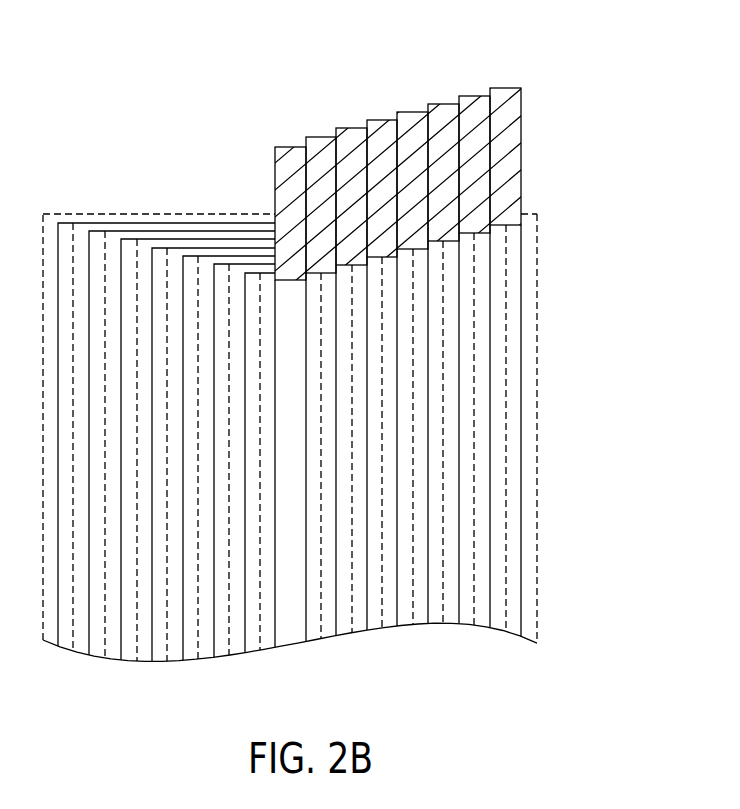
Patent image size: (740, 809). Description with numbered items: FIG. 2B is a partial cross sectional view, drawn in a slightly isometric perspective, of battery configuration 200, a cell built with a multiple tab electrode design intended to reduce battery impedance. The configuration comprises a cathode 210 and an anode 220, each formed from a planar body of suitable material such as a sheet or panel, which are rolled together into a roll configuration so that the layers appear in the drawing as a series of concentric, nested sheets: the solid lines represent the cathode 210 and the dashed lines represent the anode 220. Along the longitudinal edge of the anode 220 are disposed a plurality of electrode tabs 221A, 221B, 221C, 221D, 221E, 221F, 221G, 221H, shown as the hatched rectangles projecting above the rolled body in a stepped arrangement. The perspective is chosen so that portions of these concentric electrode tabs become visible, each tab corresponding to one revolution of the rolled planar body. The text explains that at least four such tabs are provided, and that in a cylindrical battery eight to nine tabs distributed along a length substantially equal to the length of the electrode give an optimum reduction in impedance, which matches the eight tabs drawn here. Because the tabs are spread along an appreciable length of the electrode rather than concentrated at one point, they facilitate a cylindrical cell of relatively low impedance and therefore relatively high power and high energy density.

The battery configuration 200 is at (594, 184).
The cathode 210 is at (522, 498).
The anode 220 is at (537, 432).
The electrode tab 221A is at (507, 95).
The electrode tab 221B is at (476, 98).
The electrode tab 221C is at (444, 112).
The electrode tab 221D is at (414, 118).
The electrode tab 221E is at (382, 122).
The electrode tab 221F is at (353, 133).
The electrode tab 221G is at (327, 142).
The electrode tab 221H is at (291, 152).